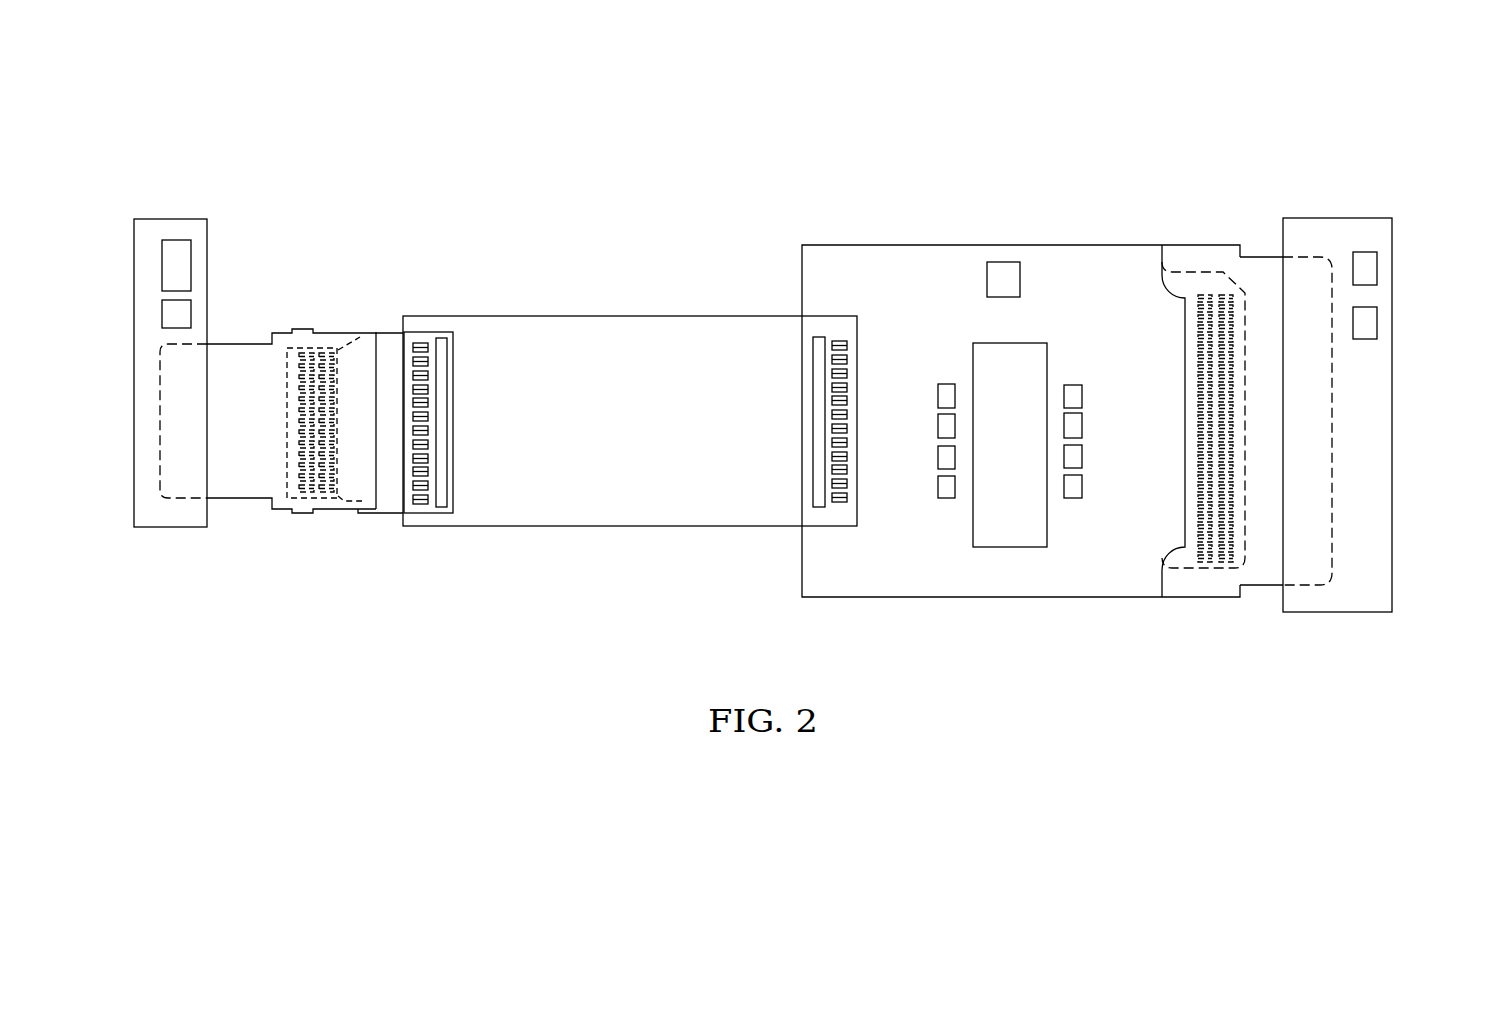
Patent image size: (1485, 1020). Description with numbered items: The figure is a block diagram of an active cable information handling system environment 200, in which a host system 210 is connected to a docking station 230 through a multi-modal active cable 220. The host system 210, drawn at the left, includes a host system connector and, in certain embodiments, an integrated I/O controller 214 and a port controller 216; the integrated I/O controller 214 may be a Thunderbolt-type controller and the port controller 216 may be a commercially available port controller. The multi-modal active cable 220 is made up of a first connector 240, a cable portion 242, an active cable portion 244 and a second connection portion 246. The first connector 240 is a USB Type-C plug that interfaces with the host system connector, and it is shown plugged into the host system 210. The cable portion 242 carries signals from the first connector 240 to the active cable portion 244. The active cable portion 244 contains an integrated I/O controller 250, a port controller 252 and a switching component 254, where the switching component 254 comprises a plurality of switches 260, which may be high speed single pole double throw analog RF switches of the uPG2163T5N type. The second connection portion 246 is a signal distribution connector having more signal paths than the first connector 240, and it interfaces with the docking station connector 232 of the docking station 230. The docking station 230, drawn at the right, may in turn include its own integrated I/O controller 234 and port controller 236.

The active cable information handling system environment 200 is at (1279, 75).
The host system 210 is at (236, 526).
The integrated I/O controller 214 is at (191, 265).
The port controller 216 is at (191, 314).
The multi-modal active cable 220 is at (772, 626).
The docking station 230 is at (1325, 218).
The docking station connector 232 is at (1255, 587).
The integrated I/O controller 234 is at (1377, 268).
The port controller 236 is at (1377, 322).
The first connector 240 is at (325, 346).
The cable portion 242 is at (630, 316).
The active cable portion 244 is at (983, 245).
The second connection portion 246 is at (1203, 272).
The integrated I/O controller 250 is at (989, 488).
The port controller 252 is at (1020, 283).
The switching component 254 is at (944, 366).
The switches 260 is at (938, 395).